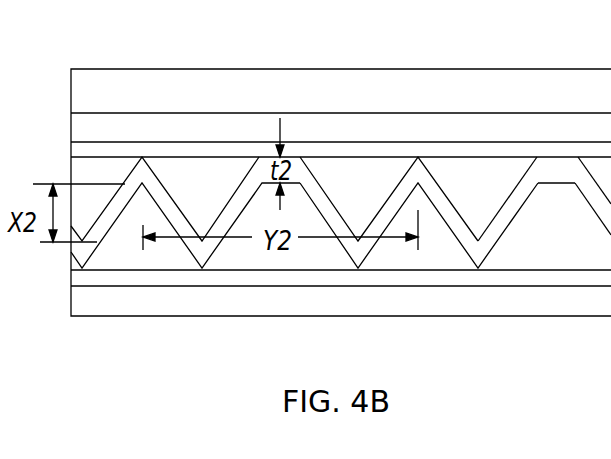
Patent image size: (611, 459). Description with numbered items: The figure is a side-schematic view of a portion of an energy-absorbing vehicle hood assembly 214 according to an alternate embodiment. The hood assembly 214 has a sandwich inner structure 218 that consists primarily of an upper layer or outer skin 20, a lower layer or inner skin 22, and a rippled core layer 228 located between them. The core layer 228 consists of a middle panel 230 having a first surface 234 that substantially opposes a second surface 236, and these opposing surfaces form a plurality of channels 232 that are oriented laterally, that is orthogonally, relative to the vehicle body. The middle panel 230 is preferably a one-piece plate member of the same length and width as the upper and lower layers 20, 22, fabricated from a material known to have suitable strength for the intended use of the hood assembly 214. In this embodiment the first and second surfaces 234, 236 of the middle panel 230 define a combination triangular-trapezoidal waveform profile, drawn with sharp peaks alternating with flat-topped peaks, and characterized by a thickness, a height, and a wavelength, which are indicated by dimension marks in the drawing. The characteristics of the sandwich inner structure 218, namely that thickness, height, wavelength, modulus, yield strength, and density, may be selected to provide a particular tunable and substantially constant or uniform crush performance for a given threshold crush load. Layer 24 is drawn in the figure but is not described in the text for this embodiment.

The energy-absorbing vehicle hood assembly 214 is at (167, 92).
The outer layer 24 is at (320, 128).
The upper layer or outer skin 20 is at (387, 150).
The rippled core layer 228 is at (450, 168).
The first surface 234 is at (498, 212).
The middle panel 230 is at (552, 168).
The channels 232 is at (267, 187).
The second surface 236 is at (513, 225).
The sandwich inner structure 218 is at (402, 297).
The lower layer or inner skin 22 is at (172, 278).